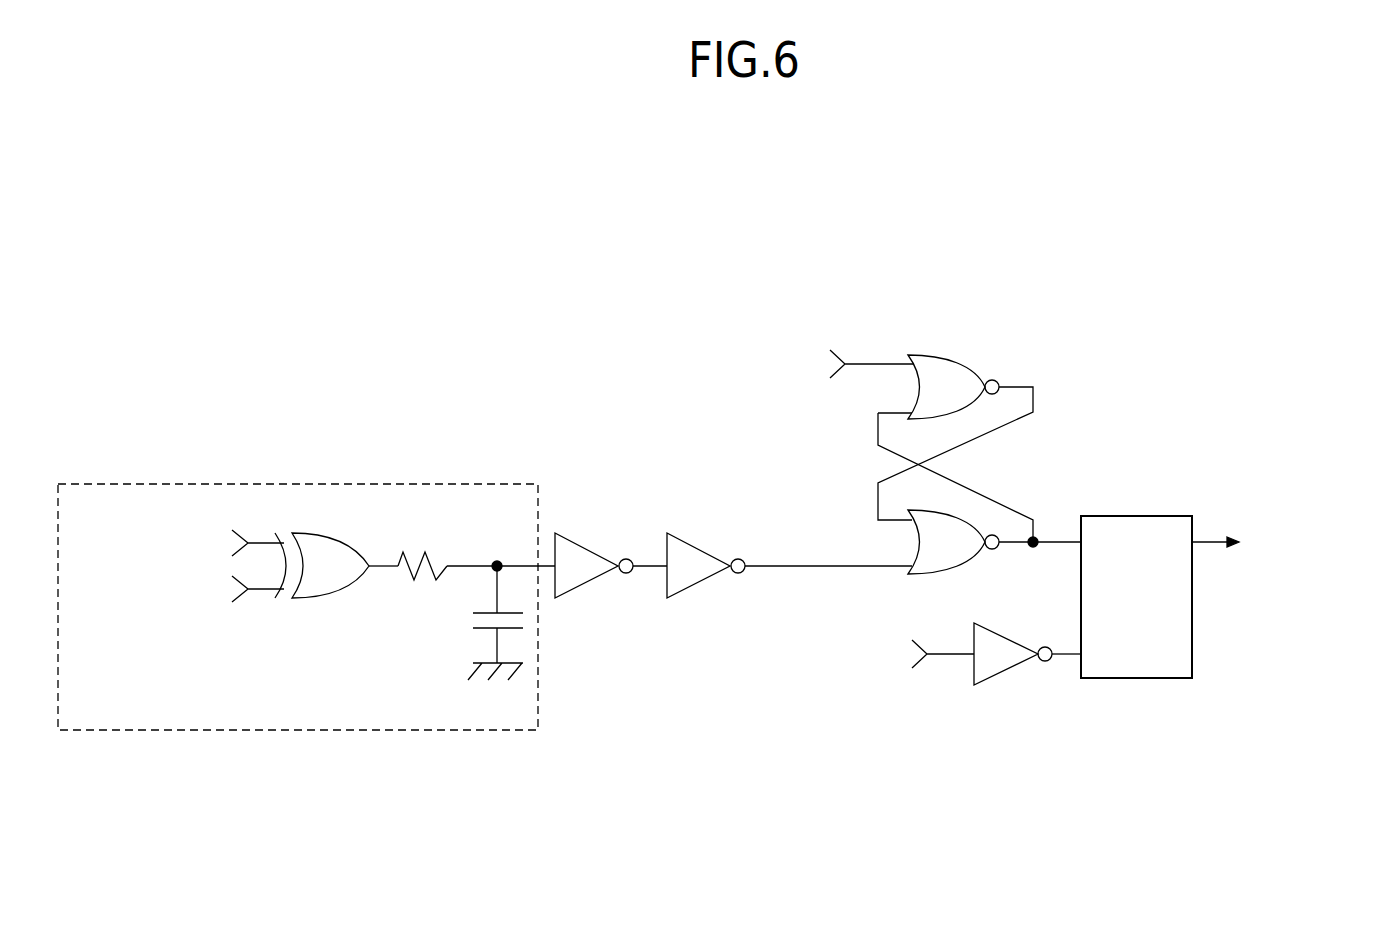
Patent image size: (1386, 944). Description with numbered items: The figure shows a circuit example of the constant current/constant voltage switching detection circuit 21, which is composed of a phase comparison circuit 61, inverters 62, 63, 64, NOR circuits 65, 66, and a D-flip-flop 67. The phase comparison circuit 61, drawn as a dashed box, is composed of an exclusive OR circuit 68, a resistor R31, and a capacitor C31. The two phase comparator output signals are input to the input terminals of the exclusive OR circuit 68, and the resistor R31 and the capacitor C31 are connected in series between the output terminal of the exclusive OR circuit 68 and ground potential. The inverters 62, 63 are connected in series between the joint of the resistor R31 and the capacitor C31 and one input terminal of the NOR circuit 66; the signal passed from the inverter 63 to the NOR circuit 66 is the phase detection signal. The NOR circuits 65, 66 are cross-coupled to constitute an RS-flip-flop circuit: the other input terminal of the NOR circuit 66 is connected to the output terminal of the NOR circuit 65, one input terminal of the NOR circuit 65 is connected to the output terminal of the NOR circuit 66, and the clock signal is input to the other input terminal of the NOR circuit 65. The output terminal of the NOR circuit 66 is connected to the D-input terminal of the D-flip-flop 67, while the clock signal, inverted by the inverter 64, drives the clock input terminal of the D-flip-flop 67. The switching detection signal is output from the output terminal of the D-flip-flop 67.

The constant current/constant voltage switching detection circuit 21 is at (1174, 416).
The phase comparison circuit 61 is at (395, 478).
The inverter 62 is at (591, 549).
The inverter 63 is at (704, 549).
The inverter 64 is at (1011, 668).
The NOR circuit 65 is at (956, 357).
The NOR circuit 66 is at (965, 572).
The D-flip-flop 67 is at (1151, 679).
The exclusive OR circuit 68 is at (345, 598).
The resistor R31 is at (422, 546).
The capacitor C31 is at (470, 623).